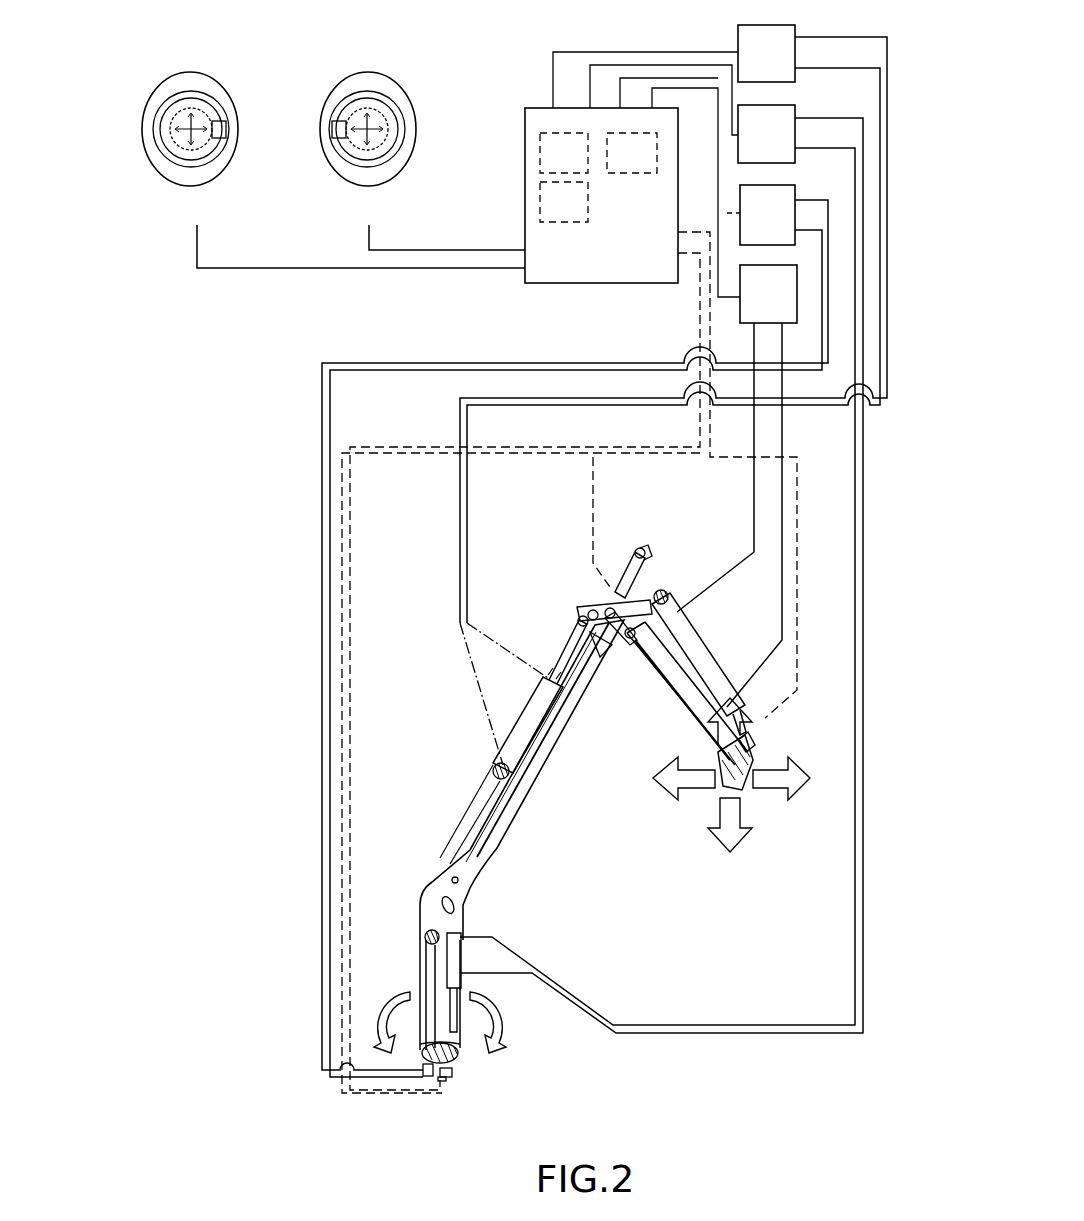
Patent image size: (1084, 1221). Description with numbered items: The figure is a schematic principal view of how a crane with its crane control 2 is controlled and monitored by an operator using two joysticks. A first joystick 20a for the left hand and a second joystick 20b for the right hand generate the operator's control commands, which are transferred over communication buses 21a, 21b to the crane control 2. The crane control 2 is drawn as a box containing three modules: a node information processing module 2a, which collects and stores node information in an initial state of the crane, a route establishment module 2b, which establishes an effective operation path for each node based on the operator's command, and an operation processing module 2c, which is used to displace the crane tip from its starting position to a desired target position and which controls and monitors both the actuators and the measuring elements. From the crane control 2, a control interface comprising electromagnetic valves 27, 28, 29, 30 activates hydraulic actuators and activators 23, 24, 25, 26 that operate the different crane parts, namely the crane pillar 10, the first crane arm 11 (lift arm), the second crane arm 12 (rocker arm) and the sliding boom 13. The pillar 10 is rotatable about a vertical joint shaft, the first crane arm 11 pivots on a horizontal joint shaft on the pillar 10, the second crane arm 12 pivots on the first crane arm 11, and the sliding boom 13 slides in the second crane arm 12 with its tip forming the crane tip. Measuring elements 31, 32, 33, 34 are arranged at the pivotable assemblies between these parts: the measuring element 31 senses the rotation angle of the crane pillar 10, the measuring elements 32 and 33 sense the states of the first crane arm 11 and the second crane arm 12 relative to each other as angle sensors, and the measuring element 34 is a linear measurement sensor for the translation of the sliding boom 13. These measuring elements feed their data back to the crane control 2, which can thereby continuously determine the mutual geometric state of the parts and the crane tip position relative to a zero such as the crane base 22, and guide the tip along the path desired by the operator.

The crane control 2 is at (601, 221).
The node information processing module 2a is at (564, 153).
The route establishment module 2b is at (564, 202).
The operation processing module 2c is at (632, 153).
The crane pillar 10 is at (421, 973).
The first crane arm 11 is at (468, 850).
The second crane arm 12 is at (684, 712).
The sliding boom 13 is at (712, 752).
The first joystick 20a is at (221, 98).
The second joystick 20b is at (398, 92).
The communication bus 21a is at (332, 268).
The communication bus 21b is at (432, 250).
The crane base 22 is at (452, 1077).
The hydraulic actuator 23 is at (453, 1058).
The hydraulic actuator 24 is at (458, 956).
The hydraulic actuator 25 is at (536, 718).
The hydraulic actuator 26 is at (703, 659).
The electromagnetic valve 27 is at (766, 53).
The electromagnetic valve 28 is at (766, 134).
The electromagnetic valve 29 is at (767, 215).
The electromagnetic valve 30 is at (768, 294).
The measuring element 31 is at (449, 1081).
The measuring element 32 is at (424, 943).
The measuring element 33 is at (642, 654).
The measuring element 34 is at (750, 746).